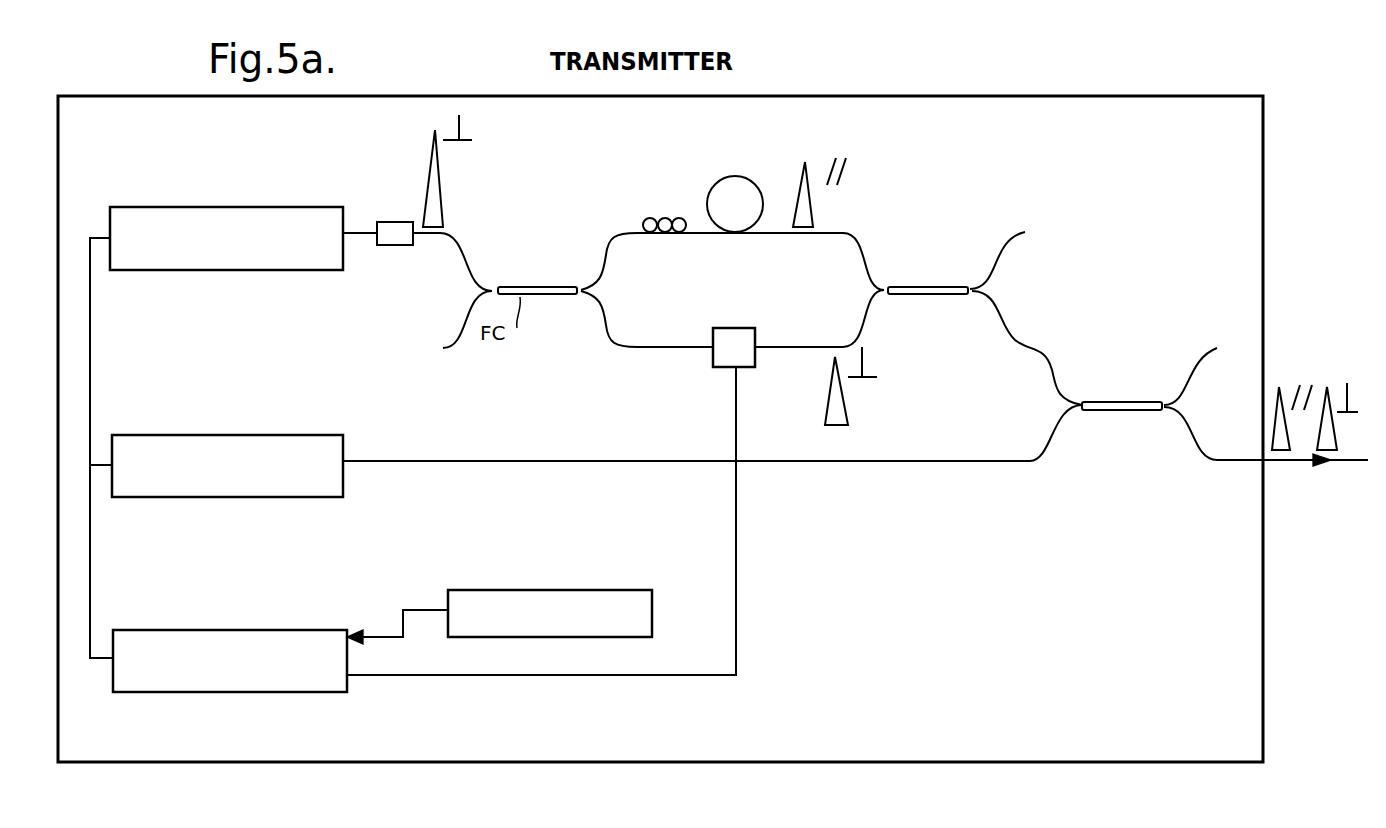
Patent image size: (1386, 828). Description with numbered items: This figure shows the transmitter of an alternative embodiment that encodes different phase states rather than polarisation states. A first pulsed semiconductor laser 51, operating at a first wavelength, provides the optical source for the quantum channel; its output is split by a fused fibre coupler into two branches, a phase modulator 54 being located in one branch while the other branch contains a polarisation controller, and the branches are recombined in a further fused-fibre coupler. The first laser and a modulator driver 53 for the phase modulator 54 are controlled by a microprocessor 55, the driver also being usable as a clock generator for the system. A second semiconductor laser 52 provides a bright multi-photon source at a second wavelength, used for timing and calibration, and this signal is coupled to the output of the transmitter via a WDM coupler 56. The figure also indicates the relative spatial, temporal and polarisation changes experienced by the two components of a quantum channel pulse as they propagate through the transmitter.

The first pulsed semiconductor laser 51 is at (148, 207).
The second semiconductor laser 52 is at (347, 452).
The modulator driver 53 is at (330, 630).
The phase modulator 54 is at (717, 366).
The microprocessor 55 is at (655, 603).
The WDM coupler 56 is at (1137, 400).